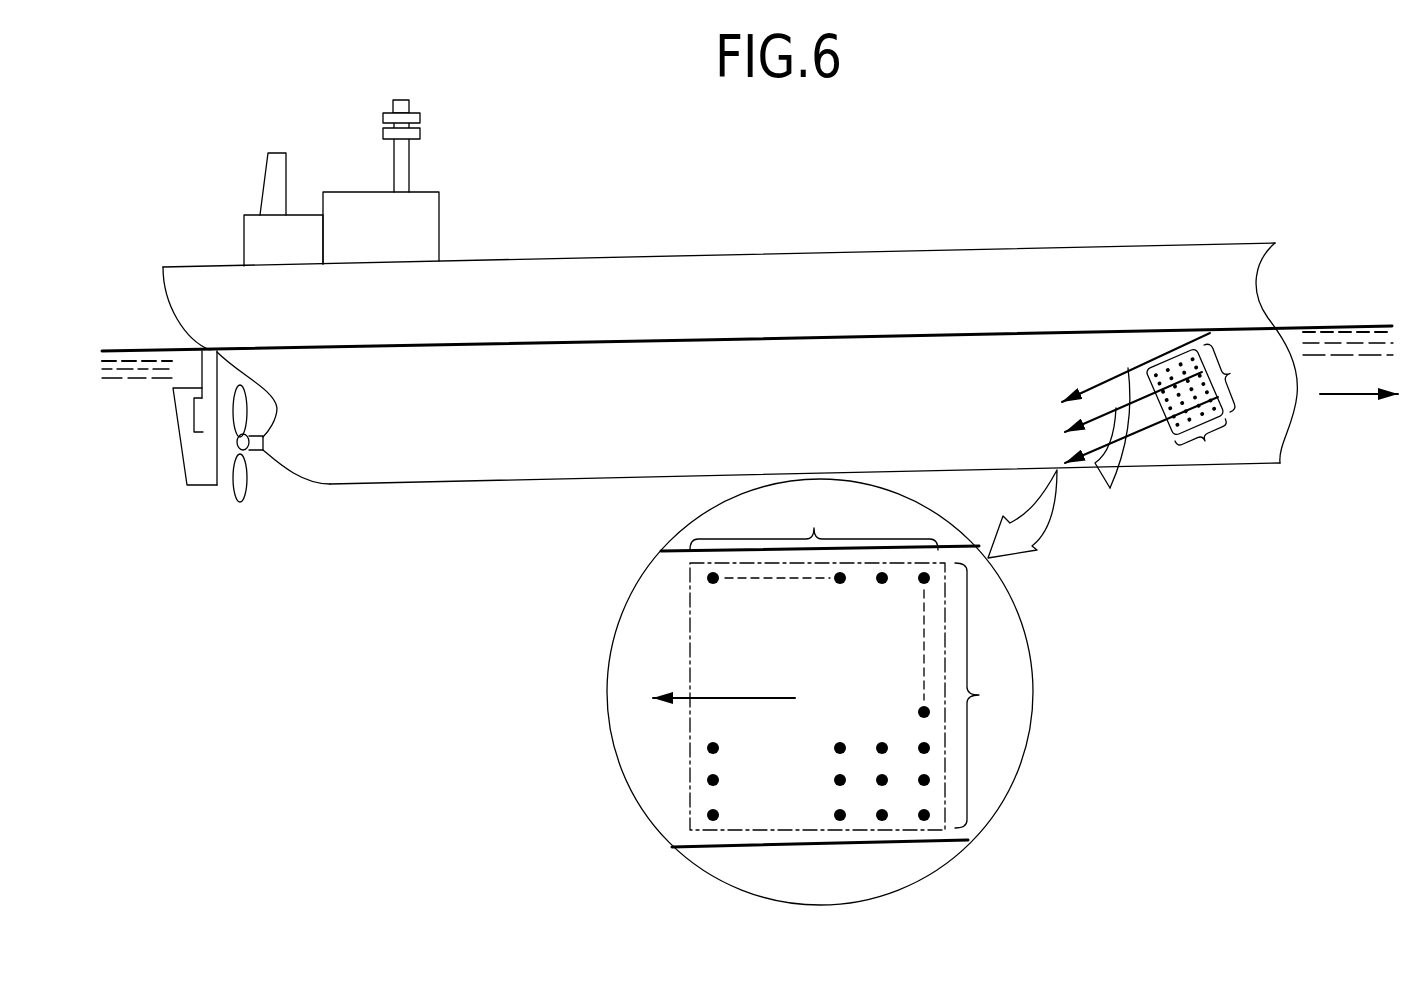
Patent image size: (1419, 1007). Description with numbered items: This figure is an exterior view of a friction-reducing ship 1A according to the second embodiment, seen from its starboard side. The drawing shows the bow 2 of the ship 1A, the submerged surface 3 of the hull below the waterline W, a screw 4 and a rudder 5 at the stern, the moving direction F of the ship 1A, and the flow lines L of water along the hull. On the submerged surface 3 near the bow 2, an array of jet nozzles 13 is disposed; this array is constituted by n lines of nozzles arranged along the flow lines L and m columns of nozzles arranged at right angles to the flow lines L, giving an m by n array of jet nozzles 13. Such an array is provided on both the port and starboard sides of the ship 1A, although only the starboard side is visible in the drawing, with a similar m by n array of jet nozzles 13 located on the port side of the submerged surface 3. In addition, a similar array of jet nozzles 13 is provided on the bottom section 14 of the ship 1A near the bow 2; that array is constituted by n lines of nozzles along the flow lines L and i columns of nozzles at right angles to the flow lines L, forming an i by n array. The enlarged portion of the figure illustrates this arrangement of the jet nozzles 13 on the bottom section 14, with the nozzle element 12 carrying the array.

The ship 1A is at (771, 254).
The bow 2 is at (1290, 405).
The submerged surface 3 is at (458, 448).
The screw 4 is at (243, 473).
The rudder 5 is at (187, 442).
The air ejection plate 12 is at (1232, 420).
The jet nozzles 13 is at (1181, 358).
The bottom section 14 is at (690, 725).
The waterline W is at (690, 342).
The moving direction F is at (1353, 395).
The flow lines L is at (1112, 441).
The columns of nozzles m is at (1229, 376).
The lines of nozzles n is at (960, 484).
The columns of nozzles i is at (969, 695).